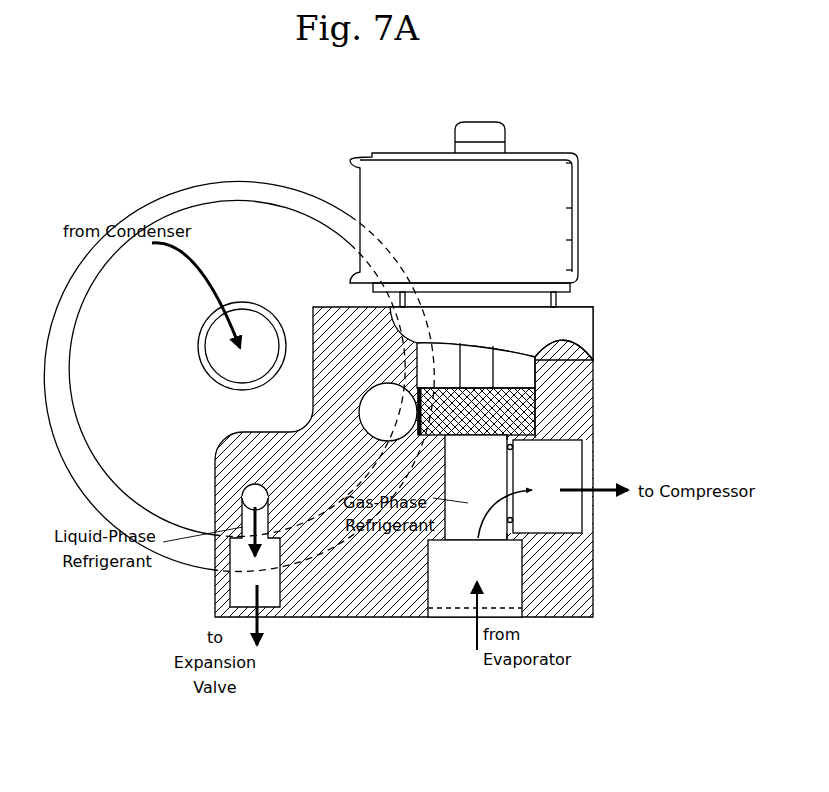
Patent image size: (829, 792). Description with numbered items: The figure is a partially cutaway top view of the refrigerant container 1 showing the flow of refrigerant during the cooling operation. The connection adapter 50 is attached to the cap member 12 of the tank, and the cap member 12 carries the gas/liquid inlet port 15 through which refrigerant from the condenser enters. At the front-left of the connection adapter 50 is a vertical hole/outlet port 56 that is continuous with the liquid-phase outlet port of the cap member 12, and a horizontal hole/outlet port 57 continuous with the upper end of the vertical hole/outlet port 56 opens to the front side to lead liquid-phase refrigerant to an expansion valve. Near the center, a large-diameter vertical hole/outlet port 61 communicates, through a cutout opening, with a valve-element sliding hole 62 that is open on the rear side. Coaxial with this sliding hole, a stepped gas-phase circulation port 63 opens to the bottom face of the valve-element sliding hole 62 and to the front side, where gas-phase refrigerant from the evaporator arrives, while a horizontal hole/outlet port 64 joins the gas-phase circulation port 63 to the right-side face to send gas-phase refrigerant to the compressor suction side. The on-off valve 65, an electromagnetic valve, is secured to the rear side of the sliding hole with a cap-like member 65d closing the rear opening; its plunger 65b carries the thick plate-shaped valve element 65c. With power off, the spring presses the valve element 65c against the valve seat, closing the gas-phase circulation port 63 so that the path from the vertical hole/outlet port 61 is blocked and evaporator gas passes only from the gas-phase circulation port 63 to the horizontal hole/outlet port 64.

The integrated valve device 1 is at (344, 369).
The cap member 12 is at (315, 214).
The gas/liquid inlet port 15 is at (273, 313).
The connection adapter 50 is at (597, 322).
The vertical hole/outlet port 56 is at (230, 502).
The horizontal hole/outlet port 57 is at (283, 543).
The vertical hole/outlet port 61 is at (371, 444).
The valve-element sliding hole 62 is at (592, 346).
The gas-phase circulation port 63 is at (443, 463).
The horizontal hole/outlet port 64 is at (558, 533).
The on-off valve 65 is at (585, 195).
The plunger 65b is at (466, 368).
The valve element 65c is at (540, 408).
The cap-like member 65d is at (560, 293).